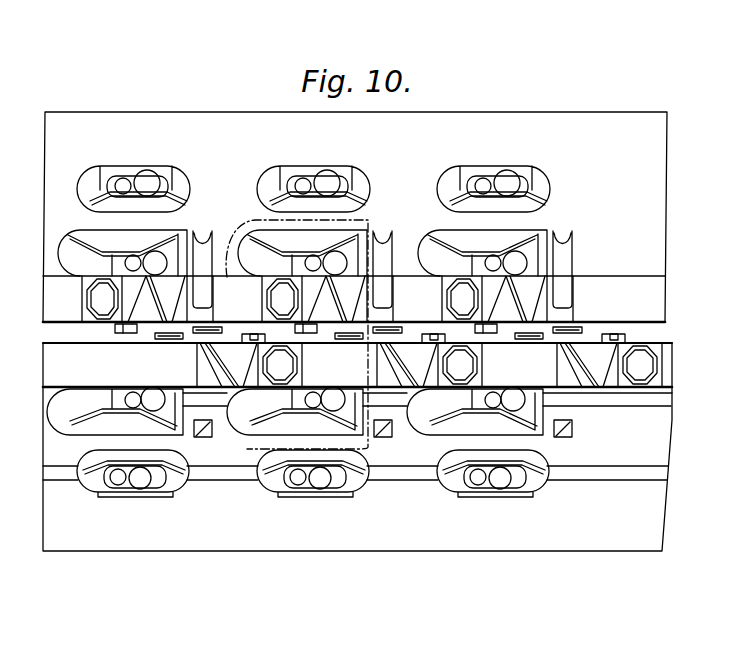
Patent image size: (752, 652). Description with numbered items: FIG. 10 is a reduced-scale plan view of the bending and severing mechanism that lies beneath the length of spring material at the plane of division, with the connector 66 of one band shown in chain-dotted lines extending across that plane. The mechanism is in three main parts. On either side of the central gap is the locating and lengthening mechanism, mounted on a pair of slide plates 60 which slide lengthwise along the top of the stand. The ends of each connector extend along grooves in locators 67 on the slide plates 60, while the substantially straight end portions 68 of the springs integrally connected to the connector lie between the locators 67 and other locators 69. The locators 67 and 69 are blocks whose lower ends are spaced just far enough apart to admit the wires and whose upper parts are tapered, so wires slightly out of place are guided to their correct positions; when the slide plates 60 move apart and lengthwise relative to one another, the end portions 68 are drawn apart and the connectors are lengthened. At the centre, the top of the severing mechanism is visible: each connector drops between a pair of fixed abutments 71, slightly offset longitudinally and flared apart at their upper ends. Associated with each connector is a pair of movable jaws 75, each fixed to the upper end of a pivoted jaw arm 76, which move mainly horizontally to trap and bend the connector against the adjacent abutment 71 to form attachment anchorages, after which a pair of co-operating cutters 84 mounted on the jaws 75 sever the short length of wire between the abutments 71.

The slide plate 60 is at (605, 537).
The connector 66 is at (375, 267).
The locator 67 is at (90, 232).
The end portion of spring 68 is at (243, 222).
The locator 69 is at (140, 200).
The fixed abutment 71 is at (395, 325).
The movable jaw 75 is at (230, 357).
The jaw arm 76 is at (72, 286).
The cutter 84 is at (618, 338).